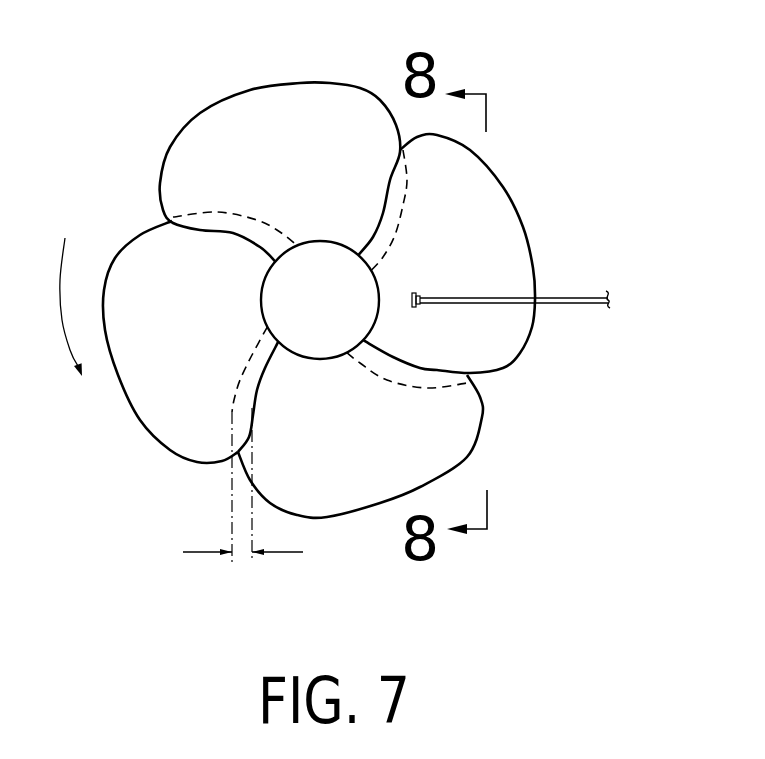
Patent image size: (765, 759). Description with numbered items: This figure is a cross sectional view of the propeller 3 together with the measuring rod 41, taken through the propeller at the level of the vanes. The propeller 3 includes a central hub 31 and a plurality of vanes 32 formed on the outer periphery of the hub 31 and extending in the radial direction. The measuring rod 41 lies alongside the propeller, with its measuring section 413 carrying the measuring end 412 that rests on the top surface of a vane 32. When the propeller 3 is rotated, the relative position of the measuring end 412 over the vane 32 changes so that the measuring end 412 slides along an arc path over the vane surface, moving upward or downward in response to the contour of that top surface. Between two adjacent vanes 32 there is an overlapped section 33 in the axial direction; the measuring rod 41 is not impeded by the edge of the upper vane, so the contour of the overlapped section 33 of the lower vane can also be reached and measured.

The propeller 3 is at (323, 264).
The hub 31 is at (280, 292).
The vane 32 is at (327, 97).
The overlapped section 33 is at (240, 554).
The measuring rod 41 is at (551, 300).
The measuring end 412 is at (417, 293).
The measuring section 413 is at (577, 296).